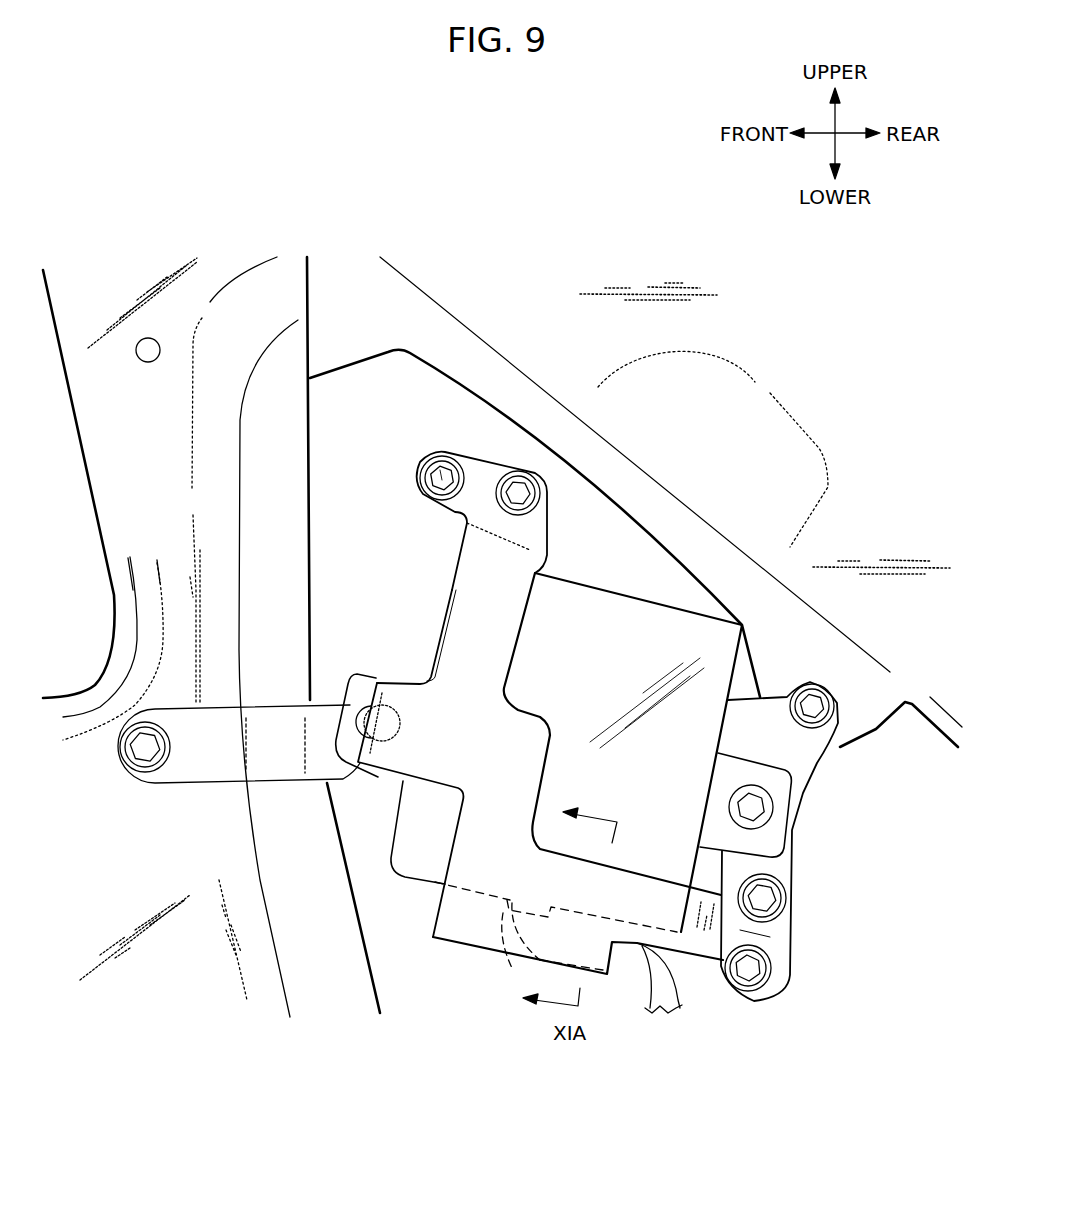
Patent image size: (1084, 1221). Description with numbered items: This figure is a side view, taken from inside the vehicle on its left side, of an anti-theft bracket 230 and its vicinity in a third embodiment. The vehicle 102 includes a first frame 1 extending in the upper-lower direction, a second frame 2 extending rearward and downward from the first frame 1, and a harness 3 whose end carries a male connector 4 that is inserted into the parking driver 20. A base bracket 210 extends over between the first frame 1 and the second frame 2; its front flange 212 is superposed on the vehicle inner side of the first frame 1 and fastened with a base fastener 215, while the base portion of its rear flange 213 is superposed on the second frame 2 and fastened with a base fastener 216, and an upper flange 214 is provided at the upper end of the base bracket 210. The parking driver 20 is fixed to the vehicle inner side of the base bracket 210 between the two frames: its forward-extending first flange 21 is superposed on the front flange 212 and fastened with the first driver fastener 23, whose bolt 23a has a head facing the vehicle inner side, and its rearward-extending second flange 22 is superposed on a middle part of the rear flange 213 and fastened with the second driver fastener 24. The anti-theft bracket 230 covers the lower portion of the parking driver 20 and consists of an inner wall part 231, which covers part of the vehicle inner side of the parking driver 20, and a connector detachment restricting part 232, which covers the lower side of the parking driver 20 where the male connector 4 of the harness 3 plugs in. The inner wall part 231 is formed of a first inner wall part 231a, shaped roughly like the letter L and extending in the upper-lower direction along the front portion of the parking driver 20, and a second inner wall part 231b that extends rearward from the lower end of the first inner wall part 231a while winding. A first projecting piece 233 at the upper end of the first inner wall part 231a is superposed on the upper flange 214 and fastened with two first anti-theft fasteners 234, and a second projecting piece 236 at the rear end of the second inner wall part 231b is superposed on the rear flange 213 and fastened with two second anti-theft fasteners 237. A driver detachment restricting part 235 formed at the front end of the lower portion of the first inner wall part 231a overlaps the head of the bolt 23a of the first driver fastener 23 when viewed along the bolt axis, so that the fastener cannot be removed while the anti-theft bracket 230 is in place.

The first frame 1 is at (122, 458).
The second frame 2 is at (374, 311).
The harness 3 is at (650, 993).
The male connector 4 is at (510, 937).
The parking driver 20 is at (667, 585).
The first flange 21 is at (317, 784).
The second flange 22 is at (768, 837).
The first driver fastener 23 is at (363, 687).
The bolt 23a is at (382, 723).
The second driver fastener 24 is at (762, 800).
The vehicle 102 is at (538, 233).
The base bracket 210 is at (285, 688).
The front flange 212 is at (207, 752).
The rear flange 213 is at (779, 866).
The upper flange 214 is at (541, 562).
The base fastener 215 is at (142, 750).
The base fastener 216 is at (815, 704).
The anti-theft bracket 230 is at (470, 968).
The inner wall part 231 is at (507, 740).
The first inner wall part 231a is at (478, 602).
The second inner wall part 231b is at (517, 873).
The connector detachment restricting part 232 is at (467, 918).
The first projecting piece 233 is at (494, 530).
The first anti-theft fasteners 234 is at (513, 493).
The driver detachment restricting part 235 is at (343, 775).
The second projecting piece 236 is at (761, 934).
The second anti-theft fasteners 237 is at (764, 897).